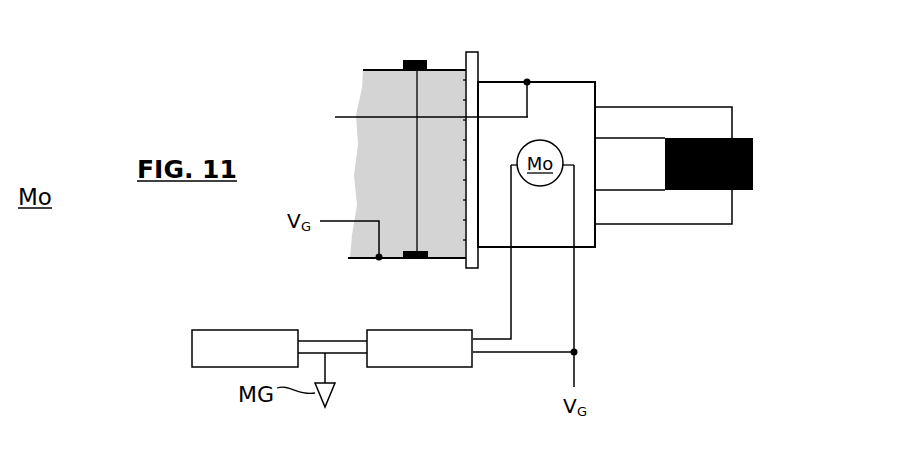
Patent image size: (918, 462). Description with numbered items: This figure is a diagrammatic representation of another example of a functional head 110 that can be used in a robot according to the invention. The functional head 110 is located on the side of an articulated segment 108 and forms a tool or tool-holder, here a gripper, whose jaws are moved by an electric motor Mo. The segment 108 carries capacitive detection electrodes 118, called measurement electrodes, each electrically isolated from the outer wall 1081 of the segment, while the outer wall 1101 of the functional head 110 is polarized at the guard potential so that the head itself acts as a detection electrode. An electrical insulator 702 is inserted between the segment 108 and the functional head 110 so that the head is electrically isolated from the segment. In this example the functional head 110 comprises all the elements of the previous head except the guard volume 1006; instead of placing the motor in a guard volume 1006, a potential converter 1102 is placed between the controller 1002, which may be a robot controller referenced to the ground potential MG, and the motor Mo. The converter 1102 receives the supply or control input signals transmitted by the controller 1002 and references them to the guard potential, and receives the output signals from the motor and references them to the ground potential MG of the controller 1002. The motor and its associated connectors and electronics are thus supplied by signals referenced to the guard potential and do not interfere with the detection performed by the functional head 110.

The articulated segment 108 is at (375, 160).
The outer wall of the segment 1081 is at (364, 258).
The capacitive detection electrode 118 is at (415, 61).
The electrical insulator 702 is at (478, 67).
The guard volume 1006 is at (580, 222).
The outer wall of the functional head 1101 is at (547, 82).
The functional head 110 is at (614, 84).
The controller 1002 is at (273, 359).
The potential converter 1102 is at (448, 359).